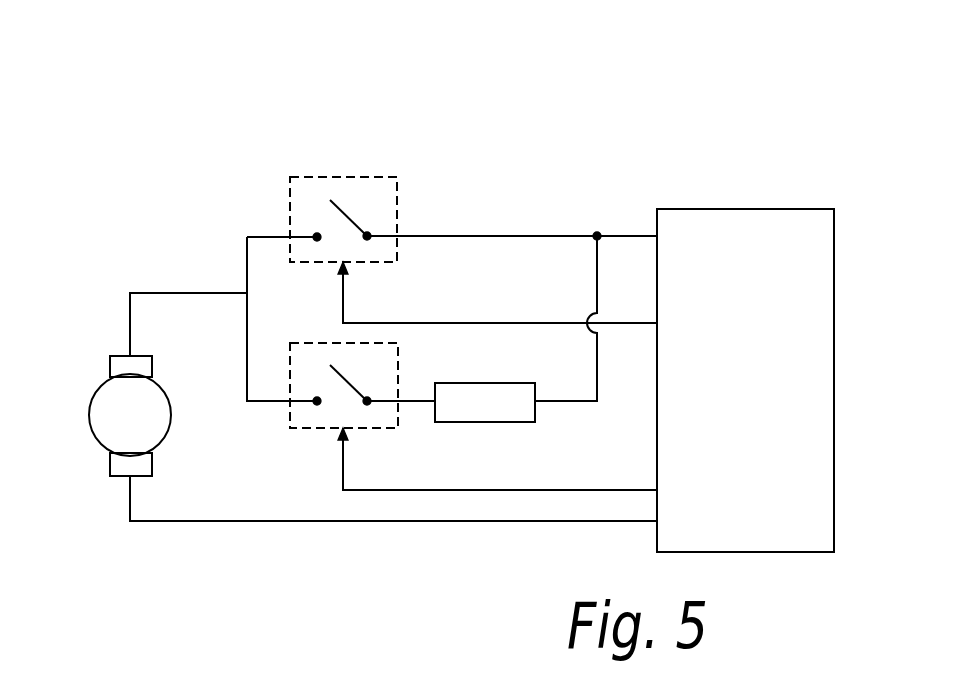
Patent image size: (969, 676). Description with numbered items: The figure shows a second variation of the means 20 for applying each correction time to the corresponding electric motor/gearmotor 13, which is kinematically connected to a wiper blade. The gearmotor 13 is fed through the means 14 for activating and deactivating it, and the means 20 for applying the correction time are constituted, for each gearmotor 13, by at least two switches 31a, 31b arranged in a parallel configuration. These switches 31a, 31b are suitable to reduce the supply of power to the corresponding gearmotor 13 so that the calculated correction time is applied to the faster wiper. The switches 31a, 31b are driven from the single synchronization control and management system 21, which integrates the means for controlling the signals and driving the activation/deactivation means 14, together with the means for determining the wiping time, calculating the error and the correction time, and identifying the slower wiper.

The electric motor/gearmotor 13 is at (99, 412).
The means for activating/deactivating the gearmotor 14 is at (247, 237).
The means for applying the correction times 20 is at (397, 172).
The synchronization control and management system 21 is at (817, 209).
The switch 31a is at (343, 217).
The switch 31b is at (353, 392).